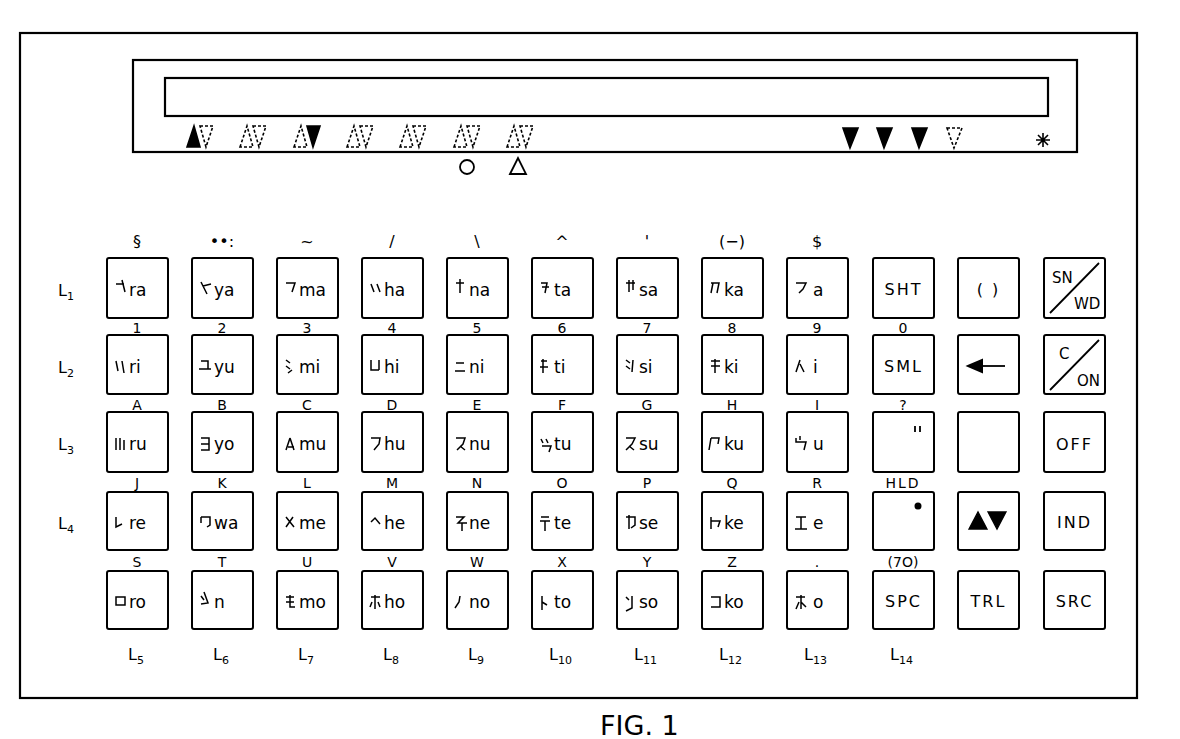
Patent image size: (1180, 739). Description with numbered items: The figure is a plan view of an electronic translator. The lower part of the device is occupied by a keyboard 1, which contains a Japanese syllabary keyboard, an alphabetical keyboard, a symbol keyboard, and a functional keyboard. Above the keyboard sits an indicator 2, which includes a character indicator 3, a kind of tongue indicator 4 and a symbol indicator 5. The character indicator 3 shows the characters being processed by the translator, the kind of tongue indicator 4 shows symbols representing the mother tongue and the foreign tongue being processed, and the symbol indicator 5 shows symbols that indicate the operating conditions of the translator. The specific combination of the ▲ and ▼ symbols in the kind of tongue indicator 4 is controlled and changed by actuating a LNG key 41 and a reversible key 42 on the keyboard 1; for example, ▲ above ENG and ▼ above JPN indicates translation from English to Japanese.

The keyboard 1 is at (537, 451).
The indicator 2 is at (722, 116).
The character indicator 3 is at (662, 103).
The kind of tongue indicator 4 is at (343, 130).
The symbol indicator 5 is at (943, 130).
The LNG key 41 is at (1013, 428).
The reversible key 42 is at (1012, 506).